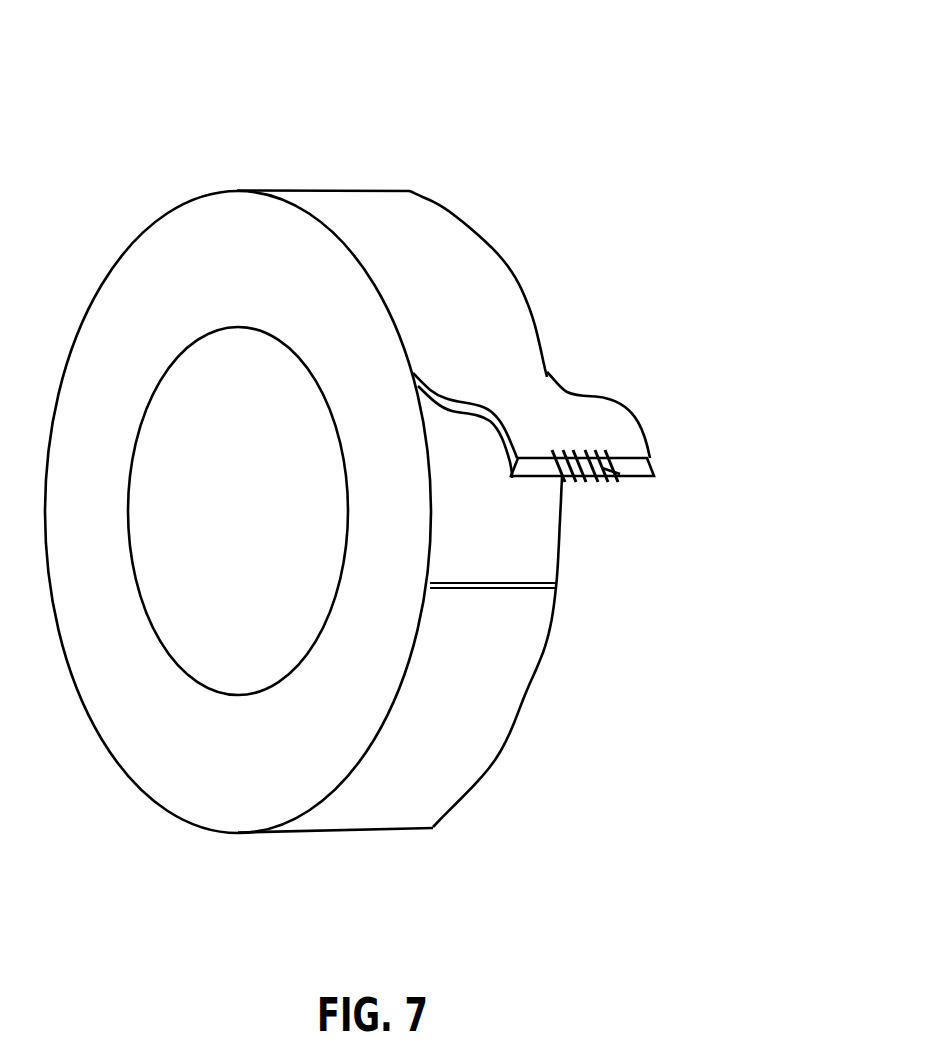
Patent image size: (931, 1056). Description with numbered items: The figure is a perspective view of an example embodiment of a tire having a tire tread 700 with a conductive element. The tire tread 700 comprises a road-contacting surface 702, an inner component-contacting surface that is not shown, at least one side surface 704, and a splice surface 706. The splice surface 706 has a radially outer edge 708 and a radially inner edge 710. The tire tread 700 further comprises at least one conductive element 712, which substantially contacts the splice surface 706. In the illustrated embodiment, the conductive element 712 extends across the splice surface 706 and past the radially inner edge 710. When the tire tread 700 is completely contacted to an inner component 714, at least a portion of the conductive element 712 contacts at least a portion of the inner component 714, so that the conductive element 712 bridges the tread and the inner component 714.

The tire tread 700 is at (148, 122).
The road-contacting surface 702 is at (550, 410).
The side surface 704 is at (492, 417).
The splice surface 706 is at (635, 468).
The radially outer edge 708 is at (635, 457).
The radially inner edge 710 is at (532, 480).
The conductive element 712 is at (605, 469).
The inner component 714 is at (532, 562).